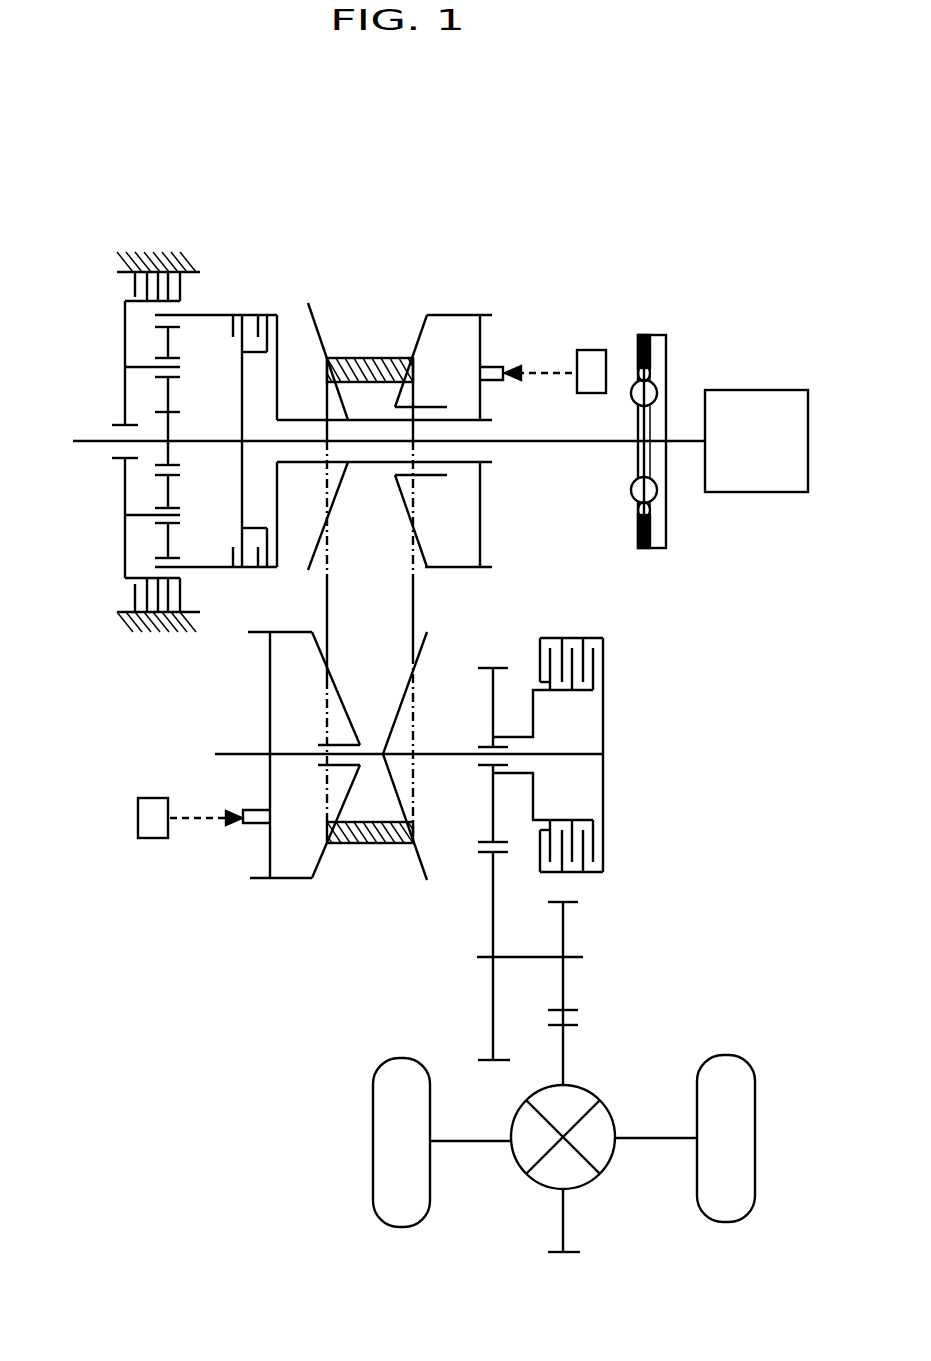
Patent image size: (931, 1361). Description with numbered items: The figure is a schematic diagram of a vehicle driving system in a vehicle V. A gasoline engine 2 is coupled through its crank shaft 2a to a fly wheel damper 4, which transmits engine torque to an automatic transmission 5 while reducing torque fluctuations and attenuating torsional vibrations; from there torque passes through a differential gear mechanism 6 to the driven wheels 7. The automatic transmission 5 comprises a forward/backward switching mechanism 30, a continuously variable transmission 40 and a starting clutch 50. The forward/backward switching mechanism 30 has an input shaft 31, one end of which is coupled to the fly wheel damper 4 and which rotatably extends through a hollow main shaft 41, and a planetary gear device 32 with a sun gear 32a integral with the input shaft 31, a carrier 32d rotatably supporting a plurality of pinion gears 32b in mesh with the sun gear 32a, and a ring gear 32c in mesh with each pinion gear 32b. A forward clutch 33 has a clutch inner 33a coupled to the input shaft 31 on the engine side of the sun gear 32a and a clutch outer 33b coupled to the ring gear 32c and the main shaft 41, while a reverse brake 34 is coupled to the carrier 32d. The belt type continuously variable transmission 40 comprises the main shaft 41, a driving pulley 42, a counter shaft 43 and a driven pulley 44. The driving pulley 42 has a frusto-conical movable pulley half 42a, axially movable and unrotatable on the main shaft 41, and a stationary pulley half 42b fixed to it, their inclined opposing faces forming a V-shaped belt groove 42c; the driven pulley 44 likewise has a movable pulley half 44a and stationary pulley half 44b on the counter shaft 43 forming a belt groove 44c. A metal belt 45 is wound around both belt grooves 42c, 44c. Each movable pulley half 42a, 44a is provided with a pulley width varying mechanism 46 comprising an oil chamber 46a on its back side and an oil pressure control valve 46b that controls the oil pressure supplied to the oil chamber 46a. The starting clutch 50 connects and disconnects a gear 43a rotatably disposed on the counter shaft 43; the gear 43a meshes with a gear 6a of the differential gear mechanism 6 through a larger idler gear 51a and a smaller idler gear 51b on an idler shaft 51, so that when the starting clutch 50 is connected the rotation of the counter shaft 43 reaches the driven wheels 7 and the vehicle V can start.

The vehicle V is at (688, 168).
The engine 2 is at (755, 390).
The crank shaft 2a is at (682, 440).
The fly wheel damper 4 is at (652, 550).
The automatic transmission 5 is at (419, 205).
The differential gear mechanism 6 is at (593, 1080).
The gear 6a is at (567, 1253).
The driven wheels 7 is at (392, 1058).
The forward/backward switching mechanism 30 is at (268, 236).
The input shaft 31 is at (560, 443).
The planetary gear device 32 is at (220, 290).
The sun gear 32a is at (173, 450).
The pinion gear 32b is at (173, 403).
The ring gear 32c is at (265, 315).
The carrier 32d is at (125, 347).
The forward clutch 33 is at (235, 587).
The clutch inner 33a is at (255, 355).
The clutch outer 33b is at (258, 556).
The reverse brake 34 is at (135, 283).
The continuously variable transmission 40 is at (336, 965).
The main shaft 41 is at (302, 418).
The driving pulley 42 is at (482, 300).
The movable pulley half 42a is at (437, 313).
The stationary pulley half 42b is at (322, 330).
The belt groove 42c is at (372, 488).
The counter shaft 43 is at (582, 753).
The gear 43a is at (490, 842).
The driven pulley 44 is at (270, 891).
The movable pulley half 44a is at (302, 880).
The stationary pulley half 44b is at (412, 858).
The belt groove 44c is at (367, 698).
The metal belt 45 is at (413, 603).
The pulley width varying mechanism 46 is at (562, 299).
The oil chamber 46a is at (487, 352).
The oil pressure control valve 46b is at (590, 350).
The starting clutch 50 is at (563, 652).
The idler shaft 51 is at (572, 955).
The larger idler gear 51a is at (493, 915).
The smaller idler gear 51b is at (567, 900).